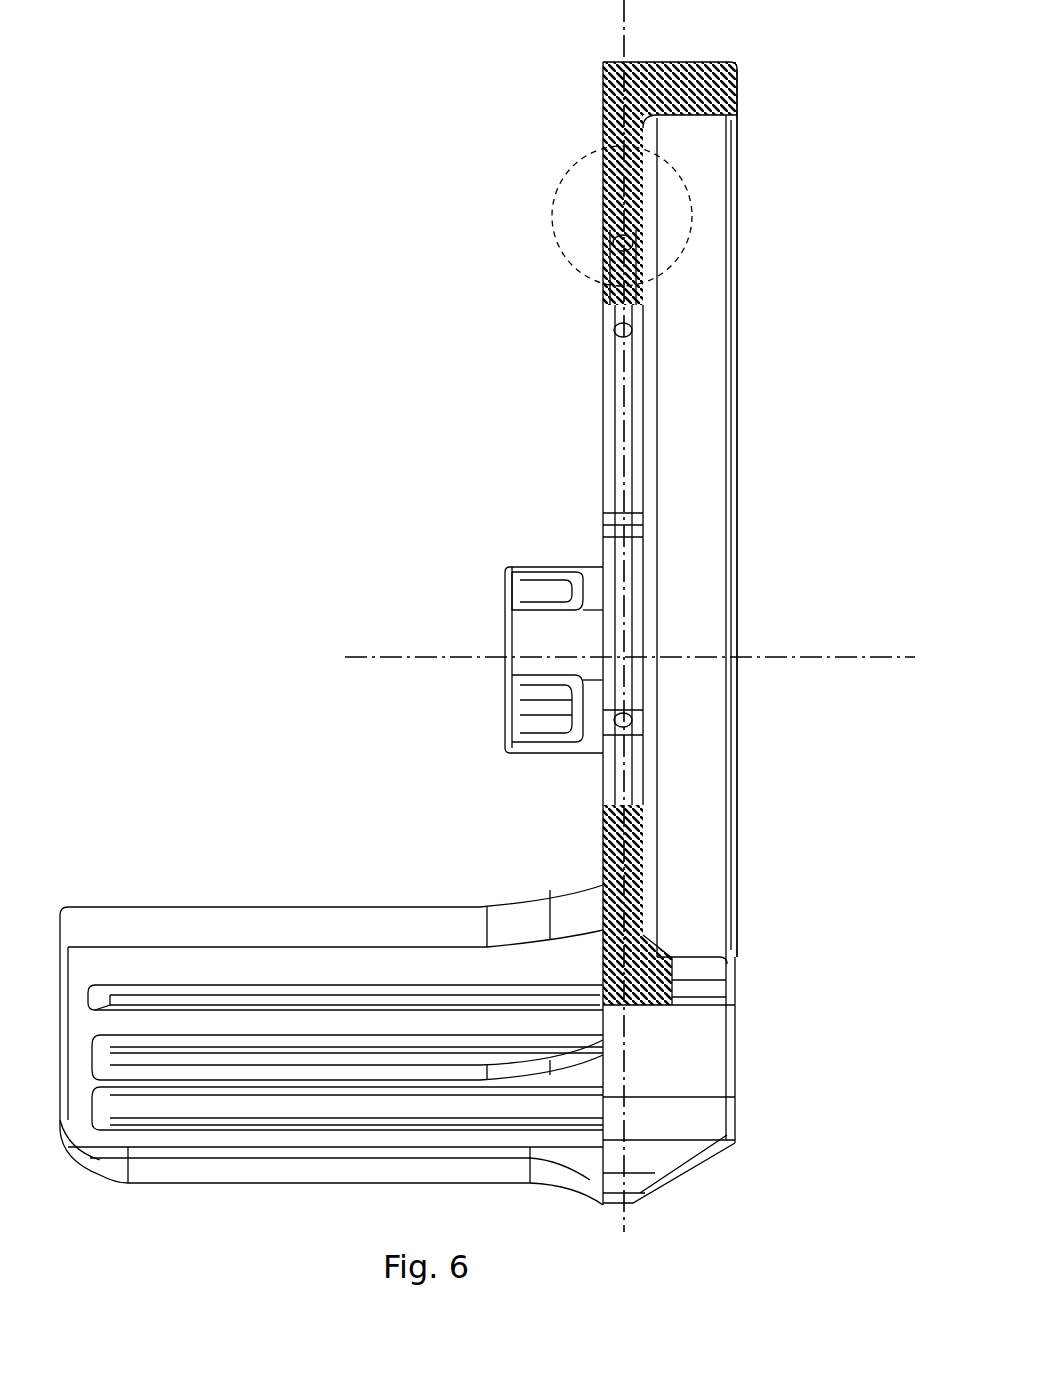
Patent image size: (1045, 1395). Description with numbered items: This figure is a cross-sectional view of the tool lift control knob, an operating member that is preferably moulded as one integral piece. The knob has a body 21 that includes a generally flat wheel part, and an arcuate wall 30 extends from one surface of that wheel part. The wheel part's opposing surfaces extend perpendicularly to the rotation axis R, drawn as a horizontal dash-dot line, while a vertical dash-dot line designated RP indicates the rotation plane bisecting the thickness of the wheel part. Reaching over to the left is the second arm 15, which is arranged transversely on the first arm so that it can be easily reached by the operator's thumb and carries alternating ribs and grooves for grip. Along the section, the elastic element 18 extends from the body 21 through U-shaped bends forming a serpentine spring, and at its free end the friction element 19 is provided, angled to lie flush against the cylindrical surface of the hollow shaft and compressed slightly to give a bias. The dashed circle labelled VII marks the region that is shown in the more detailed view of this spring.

The second arm 15 is at (245, 905).
The elastic element 18 is at (615, 242).
The friction element 19 is at (650, 287).
The body 21 is at (738, 152).
The arcuate wall 30 is at (708, 555).
The rotation axis R is at (398, 655).
The rotation plane RP is at (622, 44).
The detail view indicator VII is at (575, 175).